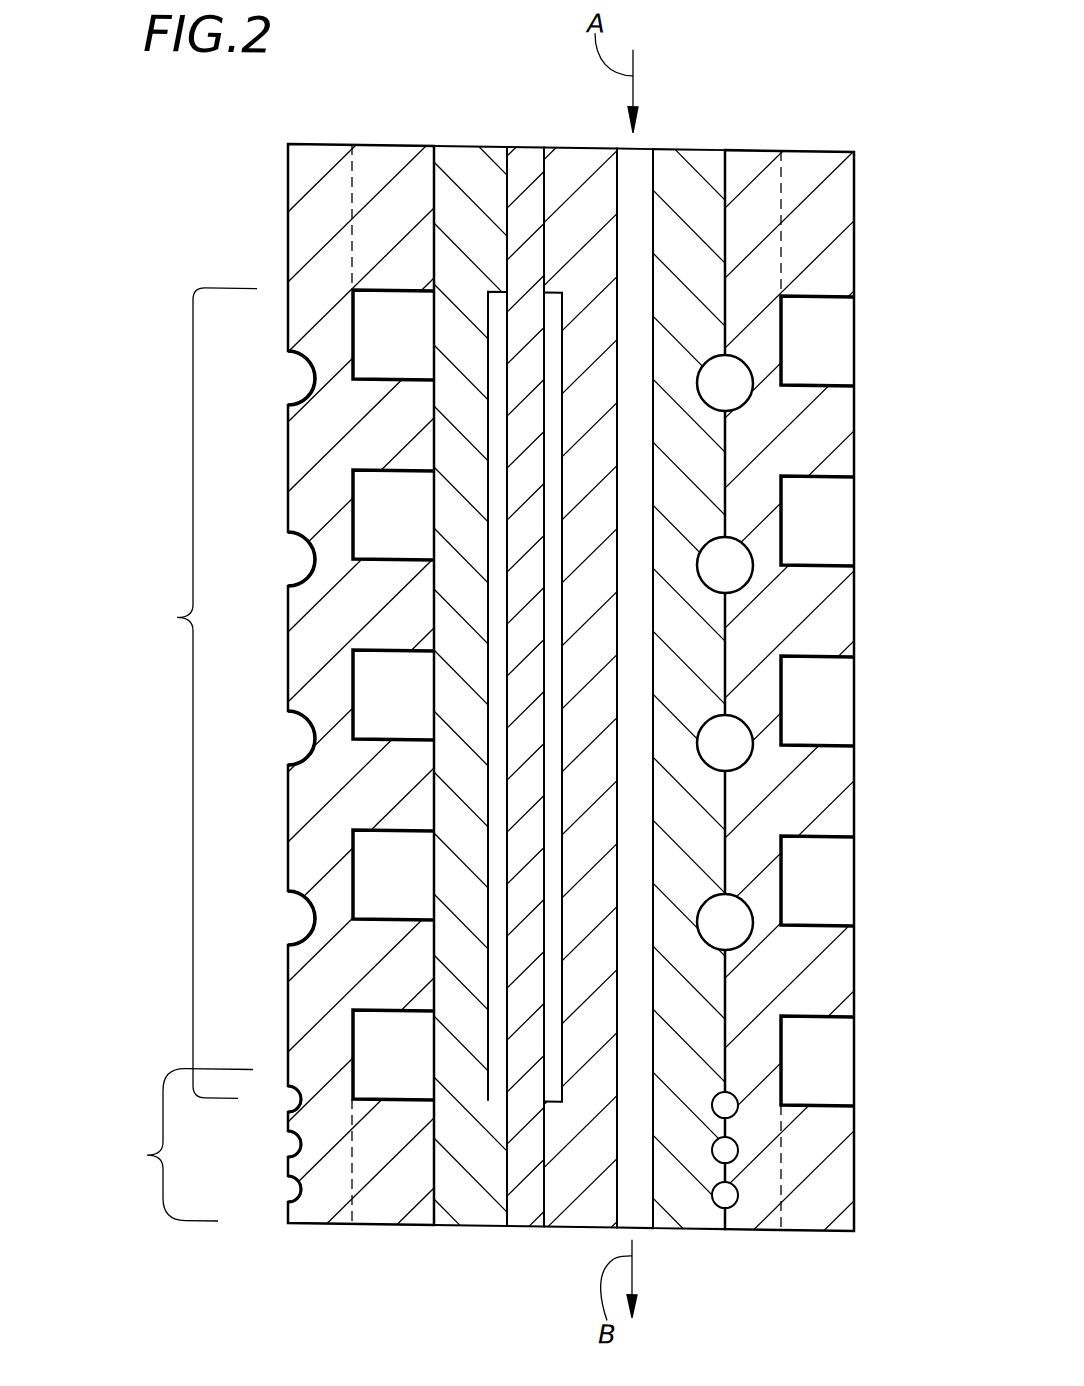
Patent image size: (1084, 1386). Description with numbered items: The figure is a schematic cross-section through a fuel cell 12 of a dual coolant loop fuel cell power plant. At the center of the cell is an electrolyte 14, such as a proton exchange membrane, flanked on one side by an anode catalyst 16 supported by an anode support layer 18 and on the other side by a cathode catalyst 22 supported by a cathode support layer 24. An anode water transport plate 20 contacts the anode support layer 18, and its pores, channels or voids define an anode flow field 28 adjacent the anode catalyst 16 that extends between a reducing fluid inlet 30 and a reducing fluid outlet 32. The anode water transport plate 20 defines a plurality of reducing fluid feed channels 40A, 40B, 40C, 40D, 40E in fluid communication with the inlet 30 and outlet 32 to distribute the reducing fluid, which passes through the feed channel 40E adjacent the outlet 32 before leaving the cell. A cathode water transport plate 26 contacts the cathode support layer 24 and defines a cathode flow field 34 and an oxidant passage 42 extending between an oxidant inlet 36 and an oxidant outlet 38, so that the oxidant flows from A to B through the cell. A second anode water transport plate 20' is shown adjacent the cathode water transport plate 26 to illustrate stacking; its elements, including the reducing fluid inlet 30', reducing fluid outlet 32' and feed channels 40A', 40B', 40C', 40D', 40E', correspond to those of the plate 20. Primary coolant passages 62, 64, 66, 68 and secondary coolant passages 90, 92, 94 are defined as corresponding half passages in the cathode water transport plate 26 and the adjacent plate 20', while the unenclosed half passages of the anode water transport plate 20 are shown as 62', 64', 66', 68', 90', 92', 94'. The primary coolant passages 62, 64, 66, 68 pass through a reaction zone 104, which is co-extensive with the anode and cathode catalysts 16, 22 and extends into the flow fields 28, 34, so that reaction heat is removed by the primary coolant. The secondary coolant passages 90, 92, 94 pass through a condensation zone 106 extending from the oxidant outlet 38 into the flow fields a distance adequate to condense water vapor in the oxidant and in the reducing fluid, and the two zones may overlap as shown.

The fuel cell 12 is at (887, 69).
The electrolyte 14 is at (527, 160).
The anode catalyst 16 is at (488, 307).
The anode support layer 18 is at (456, 180).
The anode water transport plate 20 is at (311, 674).
The second anode water transport plate 20' is at (789, 627).
The cathode catalyst 22 is at (565, 321).
The cathode support layer 24 is at (563, 1213).
The cathode water transport plate 26 is at (690, 167).
The anode flow field 28 is at (372, 408).
The reducing fluid inlet 30 is at (383, 172).
The reducing fluid inlet of second anode water transport plate 30' is at (867, 208).
The reducing fluid outlet 32 is at (377, 1207).
The reducing fluid outlet of second anode water transport plate 32' is at (788, 1216).
The cathode flow field 34 is at (682, 424).
The oxidant inlet 36 is at (637, 142).
The oxidant outlet 38 is at (639, 1213).
The reducing fluid feed channel 40A is at (393, 335).
The reducing fluid feed channel 40B is at (393, 515).
The reducing fluid feed channel 40C is at (393, 695).
The reducing fluid feed channel 40D is at (393, 875).
The reducing fluid feed channel 40E is at (393, 1055).
The reducing fluid feed channel of second anode water transport plate 40A' is at (817, 341).
The reducing fluid feed channel of second anode water transport plate 40B' is at (817, 521).
The reducing fluid feed channel of second anode water transport plate 40C' is at (817, 701).
The reducing fluid feed channel of second anode water transport plate 40D' is at (818, 881).
The reducing fluid feed channel of second anode water transport plate 40E' is at (817, 1061).
The oxidant passage 42 is at (640, 226).
The primary coolant passage 62 is at (725, 383).
The primary coolant passage 64 is at (725, 565).
The primary coolant passage 66 is at (725, 743).
The primary coolant passage 68 is at (725, 922).
The primary coolant half passage 62' is at (268, 355).
The primary coolant half passage 64' is at (269, 537).
The primary coolant half passage 66' is at (268, 715).
The primary coolant half passage 68' is at (268, 897).
The secondary coolant passage 90 is at (820, 1212).
The secondary coolant passage 92 is at (821, 1169).
The secondary coolant passage 94 is at (824, 1124).
The secondary coolant half passage 90' is at (239, 1197).
The secondary coolant half passage 92' is at (241, 1157).
The secondary coolant half passage 94' is at (241, 1116).
The reaction zone 104 is at (188, 693).
The condensation zone 106 is at (174, 1144).